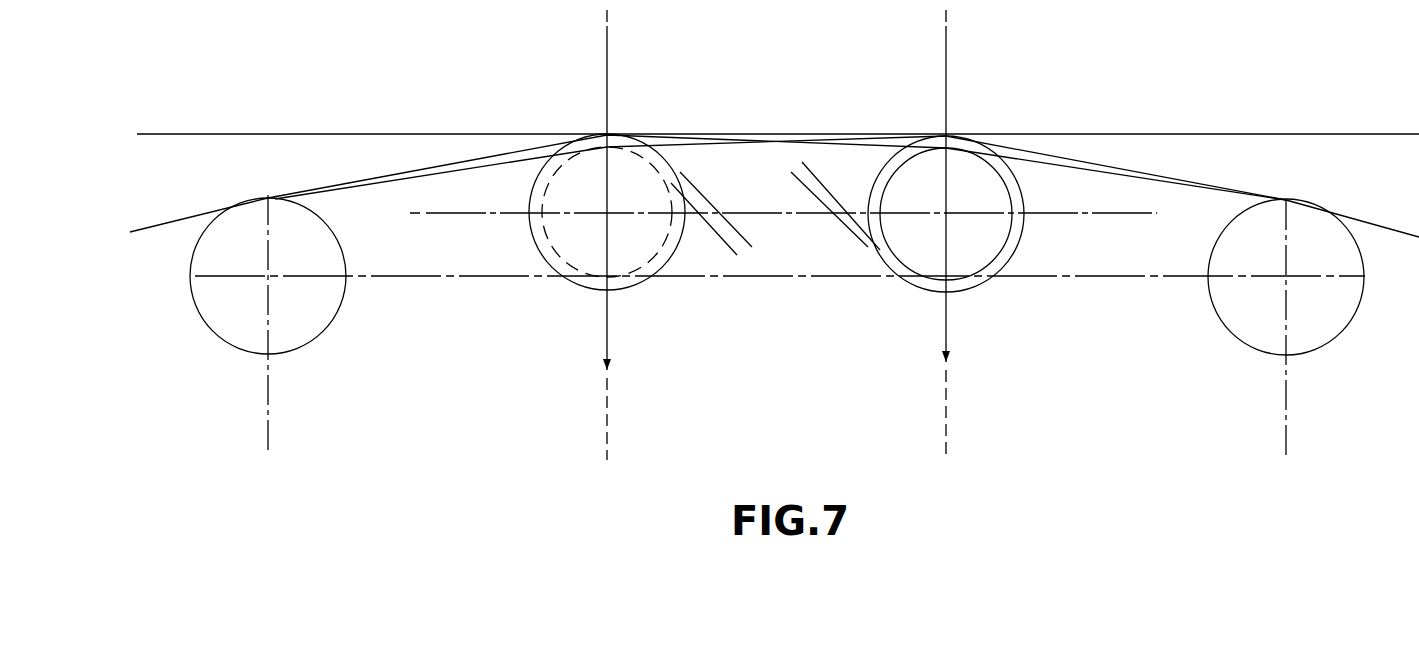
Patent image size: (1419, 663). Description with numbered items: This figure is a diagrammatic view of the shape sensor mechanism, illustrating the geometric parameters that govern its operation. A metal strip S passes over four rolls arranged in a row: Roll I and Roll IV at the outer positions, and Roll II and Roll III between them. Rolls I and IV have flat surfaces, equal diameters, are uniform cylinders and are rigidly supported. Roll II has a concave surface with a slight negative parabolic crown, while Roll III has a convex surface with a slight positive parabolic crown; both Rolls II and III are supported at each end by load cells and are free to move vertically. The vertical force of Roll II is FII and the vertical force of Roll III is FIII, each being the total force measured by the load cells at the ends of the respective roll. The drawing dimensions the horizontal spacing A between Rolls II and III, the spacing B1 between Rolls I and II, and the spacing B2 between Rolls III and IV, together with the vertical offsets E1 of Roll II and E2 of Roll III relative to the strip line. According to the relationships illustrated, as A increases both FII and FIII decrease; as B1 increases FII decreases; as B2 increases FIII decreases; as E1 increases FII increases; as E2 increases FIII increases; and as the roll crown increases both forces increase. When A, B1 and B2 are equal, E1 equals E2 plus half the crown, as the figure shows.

The Roll I is at (318, 346).
The Roll II is at (636, 288).
The Roll III is at (920, 288).
The Roll IV is at (1244, 340).
The strip S is at (166, 224).
The distance between Rolls II and III A is at (946, 36).
The distance between Rolls I and II B1 is at (607, 428).
The distance between Rolls III and IV B2 is at (1286, 430).
The vertical offset of Roll II E1 is at (247, 197).
The vertical offset of Roll III E2 is at (1119, 276).
The vertical force of Roll II FII is at (641, 365).
The vertical force of Roll III FIII is at (981, 356).